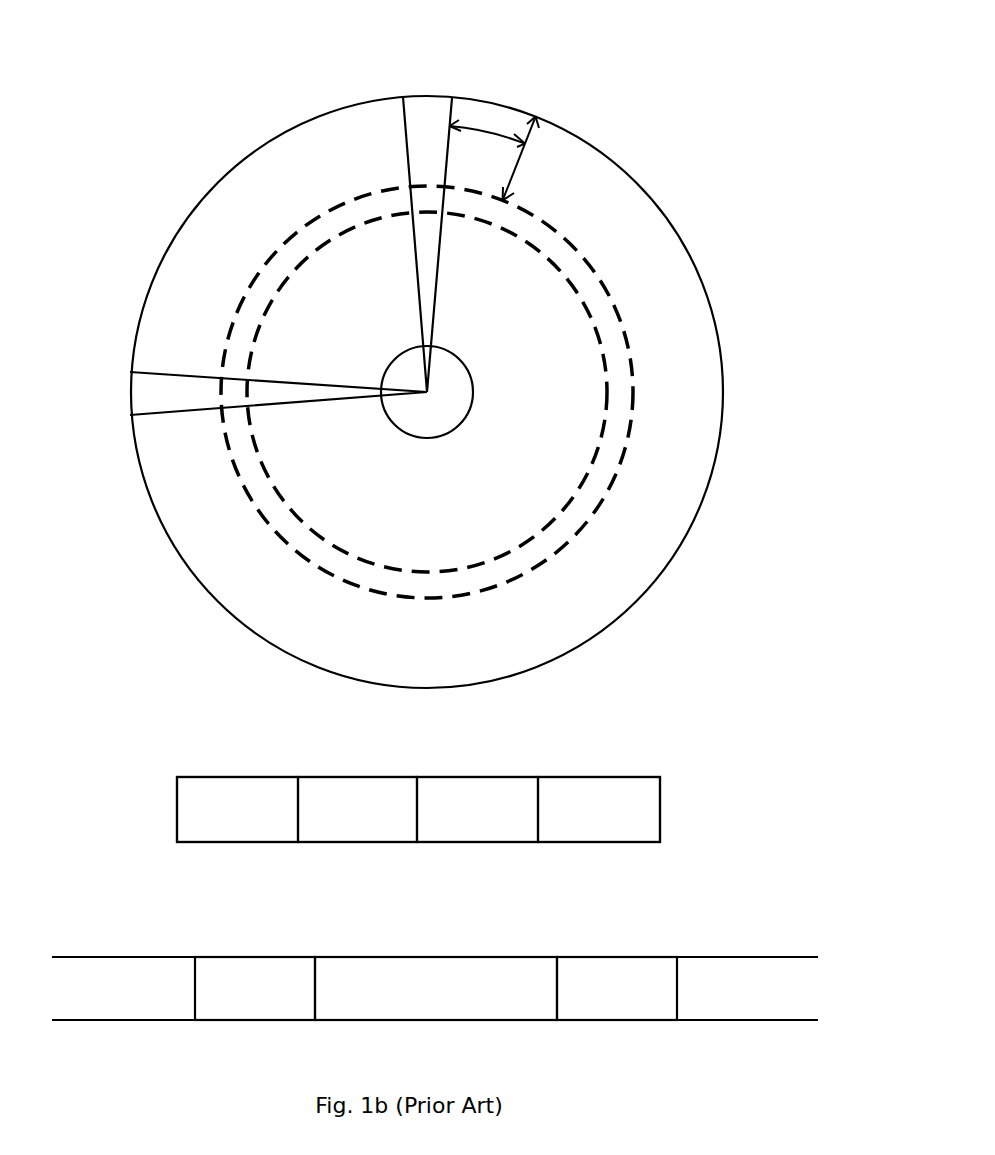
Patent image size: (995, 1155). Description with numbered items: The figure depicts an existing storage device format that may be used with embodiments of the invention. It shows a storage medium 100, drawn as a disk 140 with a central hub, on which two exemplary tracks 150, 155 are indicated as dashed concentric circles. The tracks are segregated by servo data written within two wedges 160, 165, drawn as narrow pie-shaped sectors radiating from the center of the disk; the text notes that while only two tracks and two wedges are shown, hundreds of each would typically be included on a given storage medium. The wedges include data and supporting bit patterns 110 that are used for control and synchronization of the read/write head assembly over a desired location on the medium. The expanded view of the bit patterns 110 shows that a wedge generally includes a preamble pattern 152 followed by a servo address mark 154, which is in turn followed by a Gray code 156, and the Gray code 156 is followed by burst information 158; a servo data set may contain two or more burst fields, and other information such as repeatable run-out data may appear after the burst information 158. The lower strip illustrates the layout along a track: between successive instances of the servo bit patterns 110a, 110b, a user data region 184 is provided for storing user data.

The storage medium 100 is at (136, 63).
The magnetic disk 140 is at (630, 173).
The track 150 is at (557, 233).
The track 155 is at (567, 285).
The wedge 160 is at (432, 101).
The wedge 165 is at (133, 397).
The bit patterns 110 is at (527, 750).
The preamble pattern 152 is at (237, 809).
The servo address mark 154 is at (357, 809).
The Gray code 156 is at (477, 809).
The burst information 158 is at (599, 809).
The bit patterns 110a is at (255, 988).
The bit patterns 110b is at (617, 988).
The user data region 184 is at (436, 988).